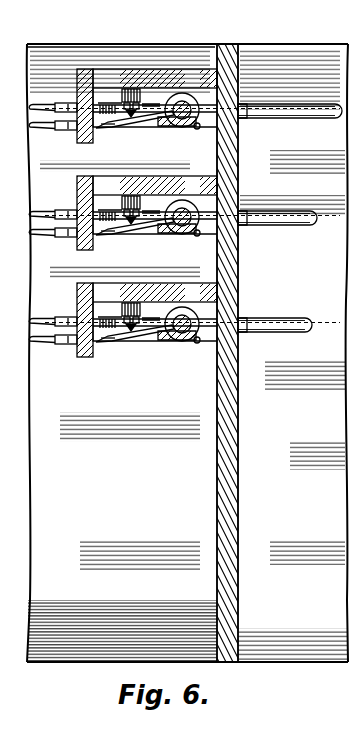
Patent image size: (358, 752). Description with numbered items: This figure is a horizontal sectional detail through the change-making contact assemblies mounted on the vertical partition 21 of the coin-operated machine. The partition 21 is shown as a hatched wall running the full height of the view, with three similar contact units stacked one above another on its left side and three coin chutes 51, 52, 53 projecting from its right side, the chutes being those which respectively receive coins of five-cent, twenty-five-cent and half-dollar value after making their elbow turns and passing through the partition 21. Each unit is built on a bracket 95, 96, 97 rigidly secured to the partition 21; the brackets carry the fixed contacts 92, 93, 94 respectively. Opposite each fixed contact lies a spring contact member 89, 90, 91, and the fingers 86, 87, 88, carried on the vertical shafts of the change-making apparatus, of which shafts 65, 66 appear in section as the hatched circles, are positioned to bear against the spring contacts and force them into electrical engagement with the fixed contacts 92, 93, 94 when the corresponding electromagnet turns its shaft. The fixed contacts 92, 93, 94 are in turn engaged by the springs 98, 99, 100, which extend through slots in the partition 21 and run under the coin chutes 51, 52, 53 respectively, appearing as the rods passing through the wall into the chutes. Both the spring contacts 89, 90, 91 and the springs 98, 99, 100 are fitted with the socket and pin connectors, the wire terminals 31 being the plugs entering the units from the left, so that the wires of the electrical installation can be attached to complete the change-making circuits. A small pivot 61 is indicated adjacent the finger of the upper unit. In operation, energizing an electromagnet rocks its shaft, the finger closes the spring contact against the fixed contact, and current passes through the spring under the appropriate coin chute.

The partition 21 is at (275, 490).
The terminal 31 is at (60, 130).
The coin chute 51 is at (275, 313).
The coin chute 52 is at (277, 227).
The coin chute 53 is at (285, 116).
The pivot 61 is at (197, 129).
The shaft 65 is at (185, 356).
The shaft 66 is at (188, 245).
The finger 86 is at (170, 335).
The finger 87 is at (171, 229).
The finger 88 is at (170, 127).
The spring contact member 89 is at (135, 341).
The spring contact member 90 is at (135, 234).
The spring contact member 91 is at (151, 121).
The fixed contact 92 is at (119, 315).
The fixed contact 93 is at (119, 208).
The fixed contact 94 is at (123, 104).
The bracket 95 is at (147, 310).
The bracket 96 is at (147, 203).
The bracket 97 is at (150, 82).
The spring 98 is at (143, 317).
The spring 99 is at (143, 210).
The spring 100 is at (165, 107).